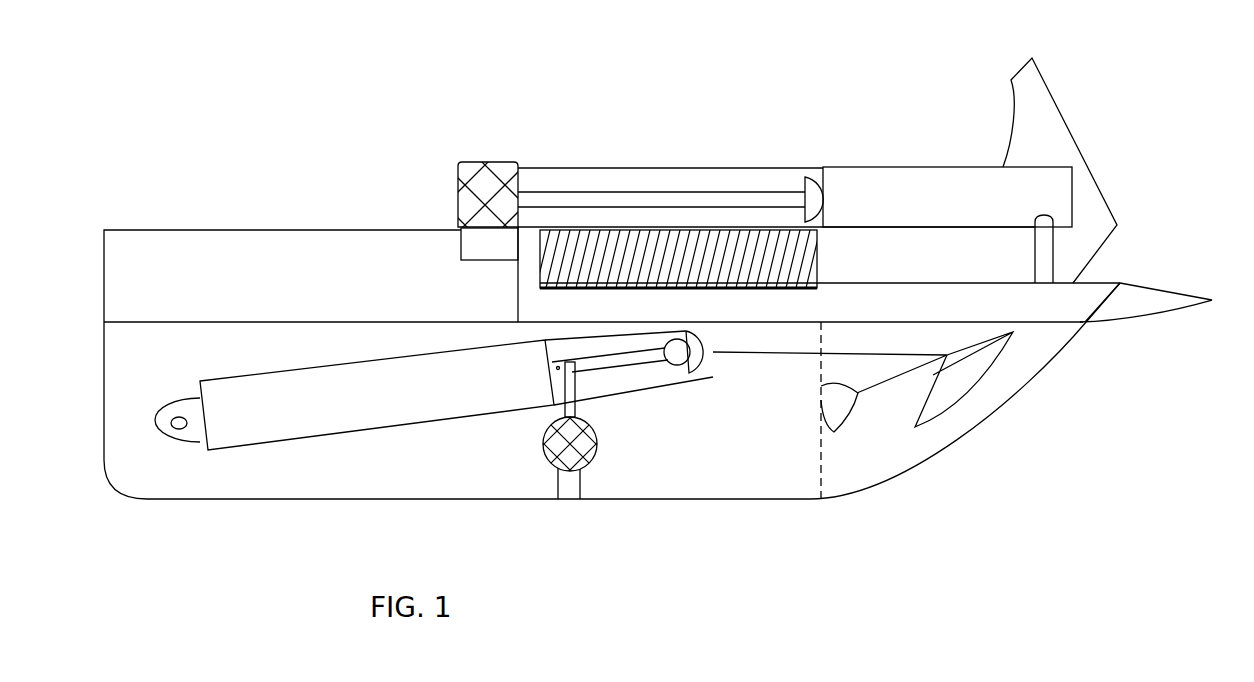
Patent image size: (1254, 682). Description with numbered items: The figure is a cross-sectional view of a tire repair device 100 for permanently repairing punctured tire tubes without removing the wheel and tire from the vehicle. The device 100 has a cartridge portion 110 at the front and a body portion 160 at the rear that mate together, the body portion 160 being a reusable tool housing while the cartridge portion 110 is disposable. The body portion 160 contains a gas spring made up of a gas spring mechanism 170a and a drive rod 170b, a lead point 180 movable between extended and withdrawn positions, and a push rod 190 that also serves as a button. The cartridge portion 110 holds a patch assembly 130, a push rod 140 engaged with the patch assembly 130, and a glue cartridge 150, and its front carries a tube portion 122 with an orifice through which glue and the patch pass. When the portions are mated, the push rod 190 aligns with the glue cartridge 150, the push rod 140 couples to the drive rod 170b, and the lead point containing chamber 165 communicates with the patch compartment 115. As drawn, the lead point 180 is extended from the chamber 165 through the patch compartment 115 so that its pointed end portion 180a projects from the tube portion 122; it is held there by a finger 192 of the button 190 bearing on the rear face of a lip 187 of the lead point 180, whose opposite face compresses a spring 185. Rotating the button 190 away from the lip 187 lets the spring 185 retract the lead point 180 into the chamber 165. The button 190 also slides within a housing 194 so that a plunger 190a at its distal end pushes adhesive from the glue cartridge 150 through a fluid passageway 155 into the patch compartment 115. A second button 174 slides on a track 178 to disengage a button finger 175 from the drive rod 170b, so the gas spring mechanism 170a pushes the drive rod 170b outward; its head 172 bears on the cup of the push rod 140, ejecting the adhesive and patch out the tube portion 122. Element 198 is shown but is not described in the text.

The tire repair device 100 is at (420, 108).
The cartridge portion 110 is at (892, 470).
The patch compartment 115 is at (980, 283).
The tube portion 122 is at (1077, 325).
The patch assembly 130 is at (988, 362).
The push rod 140 is at (763, 353).
The glue cartridge 150 is at (898, 211).
The fluid passageway 155 is at (1058, 236).
The body portion 160 is at (275, 499).
The lead point containing chamber 165 is at (130, 269).
The gas spring mechanism 170a is at (290, 409).
The drive rod 170b is at (594, 365).
The head 172 is at (678, 358).
The second button 174 is at (591, 465).
The button finger 175 is at (562, 407).
The track 178 is at (558, 478).
The lead point 180 is at (867, 316).
The pointed end portion 180a is at (1177, 310).
The spring 185 is at (815, 250).
The lip 187 is at (530, 268).
The button 190 is at (778, 185).
The plunger 190a is at (822, 196).
The finger 192 is at (461, 251).
The housing 194 is at (495, 160).
The plunger surface 198 is at (618, 169).